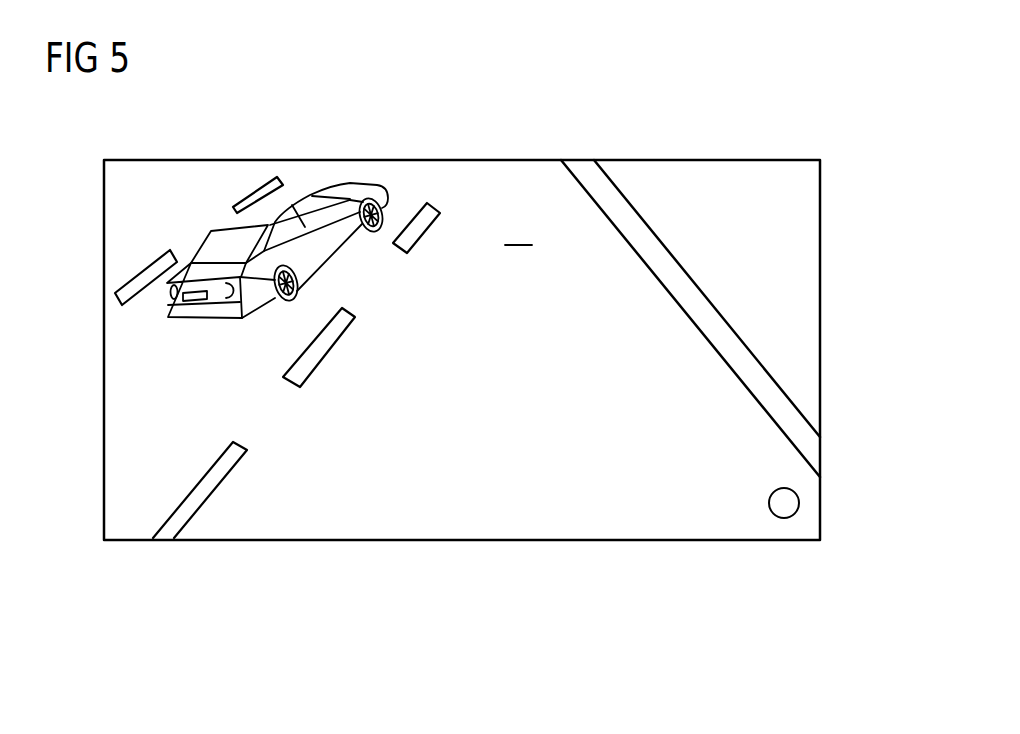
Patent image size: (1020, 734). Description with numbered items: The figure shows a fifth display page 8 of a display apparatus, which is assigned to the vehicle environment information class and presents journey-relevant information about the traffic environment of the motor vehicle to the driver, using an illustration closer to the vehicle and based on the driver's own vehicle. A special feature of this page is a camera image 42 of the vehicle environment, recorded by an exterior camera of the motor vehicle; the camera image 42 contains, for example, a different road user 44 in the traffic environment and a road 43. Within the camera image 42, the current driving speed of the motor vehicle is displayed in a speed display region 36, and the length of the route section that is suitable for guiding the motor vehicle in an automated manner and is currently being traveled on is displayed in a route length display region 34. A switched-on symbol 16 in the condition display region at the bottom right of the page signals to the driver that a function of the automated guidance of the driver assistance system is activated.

The fifth display page 8 is at (841, 116).
The switched-on symbol 16 is at (784, 512).
The route length display region 34 is at (575, 410).
The speed display region 36 is at (482, 410).
The camera image 42 is at (518, 229).
The road 43 is at (373, 425).
The road user 44 is at (235, 222).